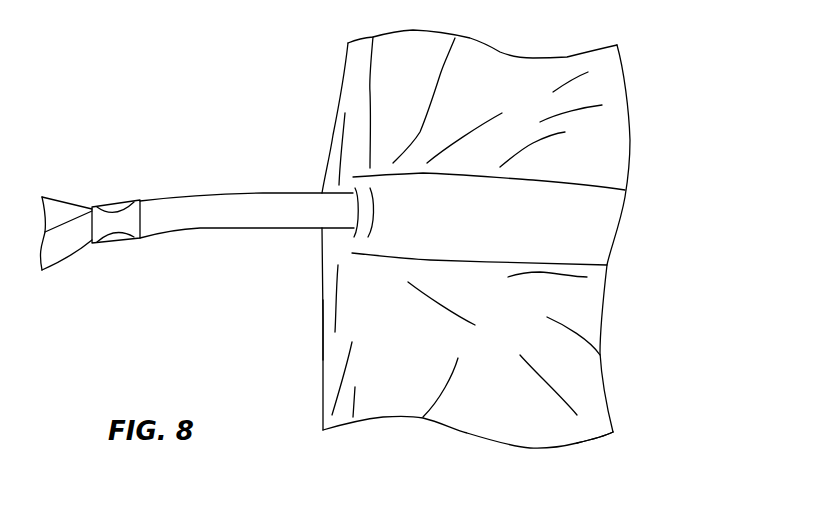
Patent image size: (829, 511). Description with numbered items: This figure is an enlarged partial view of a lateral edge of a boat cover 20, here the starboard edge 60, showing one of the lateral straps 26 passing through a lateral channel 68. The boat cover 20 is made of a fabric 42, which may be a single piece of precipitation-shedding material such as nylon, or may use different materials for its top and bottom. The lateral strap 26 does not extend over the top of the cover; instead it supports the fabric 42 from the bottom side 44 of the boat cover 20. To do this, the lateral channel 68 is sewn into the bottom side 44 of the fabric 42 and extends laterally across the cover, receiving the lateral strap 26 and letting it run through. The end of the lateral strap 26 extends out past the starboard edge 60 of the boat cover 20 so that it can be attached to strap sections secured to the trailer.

The boat cover 20 is at (533, 428).
The lateral strap 26 is at (190, 208).
The fabric 42 is at (657, 417).
The bottom side 44 is at (426, 353).
The starboard edge 60 is at (323, 330).
The lateral channel 68 is at (463, 197).